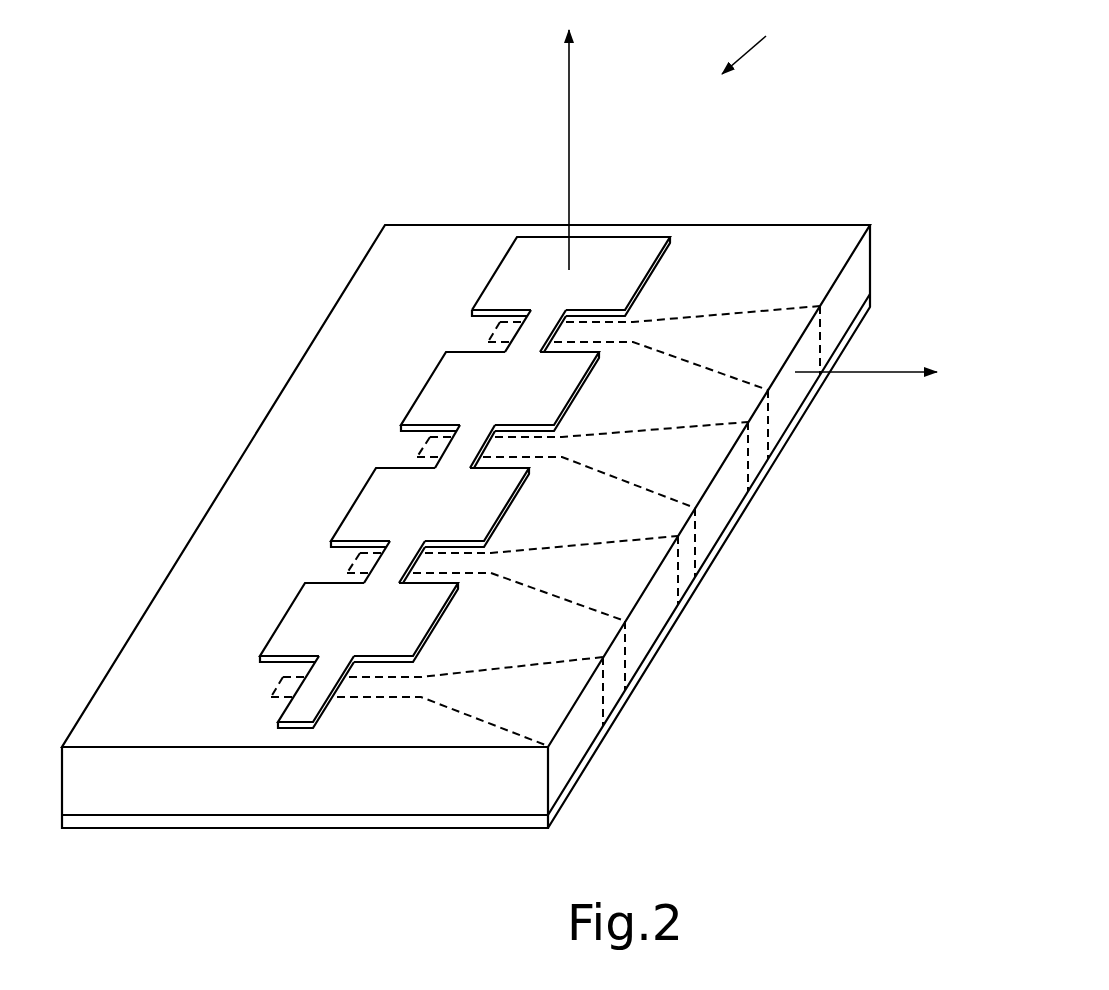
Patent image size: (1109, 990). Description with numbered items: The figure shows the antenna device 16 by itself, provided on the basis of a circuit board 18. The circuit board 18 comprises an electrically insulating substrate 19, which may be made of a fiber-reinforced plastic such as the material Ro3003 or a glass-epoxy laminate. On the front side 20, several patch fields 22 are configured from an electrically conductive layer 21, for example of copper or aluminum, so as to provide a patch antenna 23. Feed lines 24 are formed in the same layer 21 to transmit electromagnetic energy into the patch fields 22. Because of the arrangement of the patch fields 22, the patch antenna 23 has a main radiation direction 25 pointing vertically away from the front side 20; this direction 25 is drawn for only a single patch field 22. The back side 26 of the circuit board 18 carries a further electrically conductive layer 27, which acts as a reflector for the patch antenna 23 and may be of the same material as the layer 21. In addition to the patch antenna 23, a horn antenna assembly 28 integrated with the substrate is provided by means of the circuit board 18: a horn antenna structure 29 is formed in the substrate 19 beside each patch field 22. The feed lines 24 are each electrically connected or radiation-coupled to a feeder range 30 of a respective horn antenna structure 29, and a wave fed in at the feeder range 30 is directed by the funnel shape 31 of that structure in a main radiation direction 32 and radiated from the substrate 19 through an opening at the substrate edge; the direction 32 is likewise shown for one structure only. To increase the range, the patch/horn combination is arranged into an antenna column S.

The antenna device 16 is at (340, 126).
The circuit board 18 is at (252, 378).
The substrate 19 is at (200, 795).
The front side 20 is at (359, 325).
The electrically conductive layer 21 is at (288, 726).
The patch fields 22 is at (498, 268).
The patch antenna 23 is at (622, 222).
The feed lines 24 is at (514, 337).
The main radiation direction 25 is at (569, 120).
The back side 26 is at (147, 818).
The electrically conductive layer 27 is at (432, 822).
The horn antenna assembly 28 is at (760, 248).
The horn antenna structure 29 is at (748, 311).
The feeder range 30 is at (615, 335).
The funnel shape 31 is at (788, 385).
The main radiation direction 32 is at (885, 372).
The antenna column S is at (756, 38).